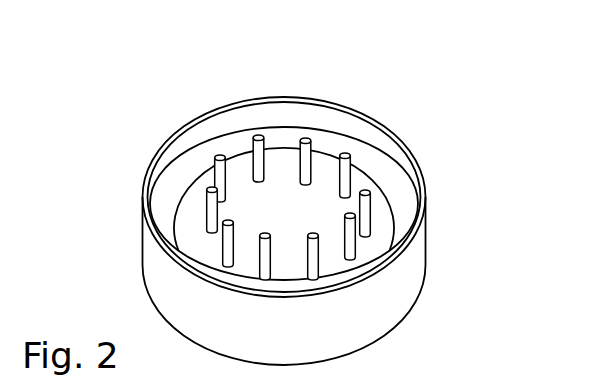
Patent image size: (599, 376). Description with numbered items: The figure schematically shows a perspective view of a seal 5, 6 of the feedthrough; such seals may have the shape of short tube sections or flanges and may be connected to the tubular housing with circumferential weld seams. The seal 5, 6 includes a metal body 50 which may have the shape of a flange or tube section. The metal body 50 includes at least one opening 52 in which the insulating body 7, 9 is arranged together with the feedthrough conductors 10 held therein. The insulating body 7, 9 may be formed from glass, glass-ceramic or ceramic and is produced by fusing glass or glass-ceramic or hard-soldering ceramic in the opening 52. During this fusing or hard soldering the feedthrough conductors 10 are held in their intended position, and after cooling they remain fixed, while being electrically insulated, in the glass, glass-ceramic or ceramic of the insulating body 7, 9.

The seal 5 is at (342, 202).
The seal 6 is at (512, 372).
The insulating body 7 is at (312, 160).
The insulating body 9 is at (302, 200).
The feedthrough conductors 10 is at (353, 150).
The metal body 50 is at (425, 275).
The opening 52 is at (242, 152).